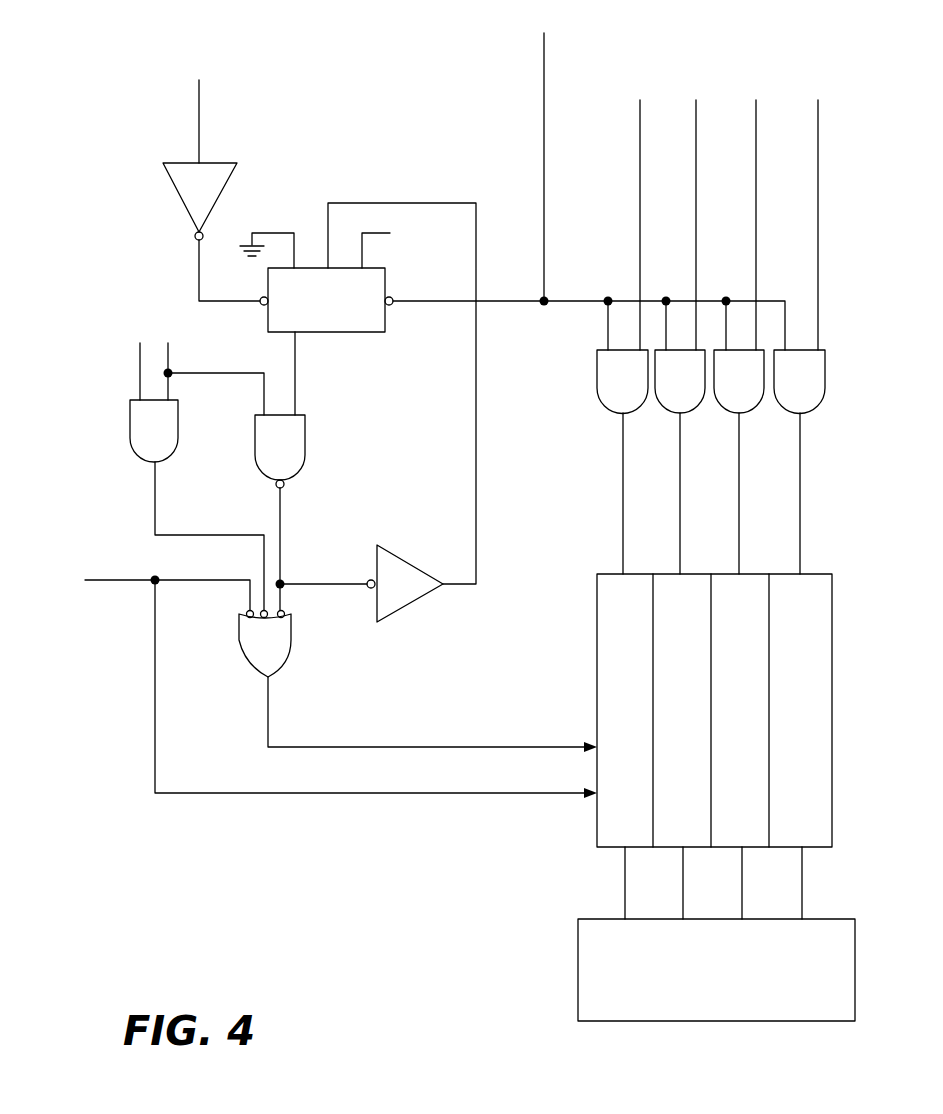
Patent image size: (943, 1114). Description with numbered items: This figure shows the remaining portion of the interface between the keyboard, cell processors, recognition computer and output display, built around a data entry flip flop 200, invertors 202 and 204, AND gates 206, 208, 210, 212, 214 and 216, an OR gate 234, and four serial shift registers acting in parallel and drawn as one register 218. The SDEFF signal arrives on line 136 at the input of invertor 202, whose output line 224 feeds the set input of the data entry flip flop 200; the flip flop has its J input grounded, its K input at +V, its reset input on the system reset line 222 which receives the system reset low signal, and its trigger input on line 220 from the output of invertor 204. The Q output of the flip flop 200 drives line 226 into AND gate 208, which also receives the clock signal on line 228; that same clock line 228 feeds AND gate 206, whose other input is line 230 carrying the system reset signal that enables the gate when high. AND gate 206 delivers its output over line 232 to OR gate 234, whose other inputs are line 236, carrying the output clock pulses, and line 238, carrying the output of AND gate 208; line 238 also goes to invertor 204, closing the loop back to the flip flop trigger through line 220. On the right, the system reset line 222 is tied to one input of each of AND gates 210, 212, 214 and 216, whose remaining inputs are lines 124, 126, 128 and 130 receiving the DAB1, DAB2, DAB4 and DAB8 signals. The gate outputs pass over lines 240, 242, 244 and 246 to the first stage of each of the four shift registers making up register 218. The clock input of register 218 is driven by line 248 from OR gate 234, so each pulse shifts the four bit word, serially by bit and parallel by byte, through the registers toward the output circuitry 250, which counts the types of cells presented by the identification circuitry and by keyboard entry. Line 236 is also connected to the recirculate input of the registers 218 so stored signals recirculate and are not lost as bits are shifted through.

The line 136 is at (200, 114).
The invertor 202 is at (223, 181).
The output line 224 is at (199, 263).
The data entry flip flop 200 is at (390, 306).
The system reset line 222 is at (543, 178).
The line 220 is at (479, 432).
The line 226 is at (296, 389).
The line 230 is at (138, 378).
The line 228 is at (223, 376).
The AND gate 206 is at (170, 437).
The AND gate 208 is at (292, 458).
The output line 232 is at (154, 503).
The line 238 is at (283, 525).
The line 236 is at (131, 588).
The OR gate 234 is at (278, 652).
The invertor 204 is at (405, 600).
The line 248 is at (392, 746).
The input line 124 is at (641, 220).
The input line 126 is at (697, 232).
The input line 128 is at (757, 227).
The input line 130 is at (819, 233).
The AND gate 210 is at (613, 395).
The AND gate 212 is at (672, 397).
The AND gate 214 is at (737, 397).
The AND gate 216 is at (797, 397).
The line 240 is at (621, 485).
The line 242 is at (678, 485).
The line 244 is at (738, 510).
The line 246 is at (797, 495).
The shift registers 218 is at (582, 599).
The output circuitry 250 is at (580, 952).